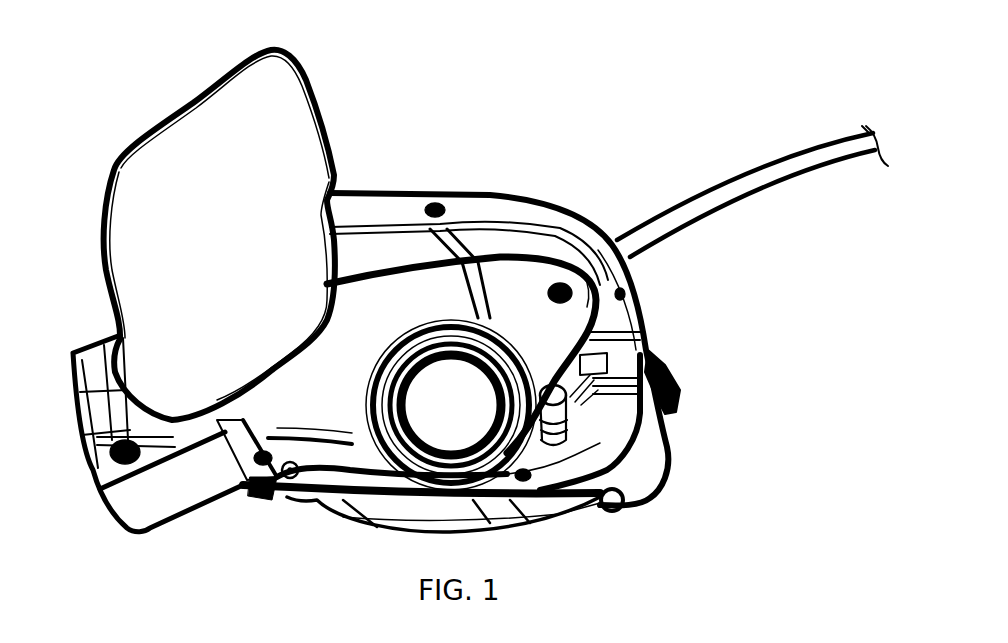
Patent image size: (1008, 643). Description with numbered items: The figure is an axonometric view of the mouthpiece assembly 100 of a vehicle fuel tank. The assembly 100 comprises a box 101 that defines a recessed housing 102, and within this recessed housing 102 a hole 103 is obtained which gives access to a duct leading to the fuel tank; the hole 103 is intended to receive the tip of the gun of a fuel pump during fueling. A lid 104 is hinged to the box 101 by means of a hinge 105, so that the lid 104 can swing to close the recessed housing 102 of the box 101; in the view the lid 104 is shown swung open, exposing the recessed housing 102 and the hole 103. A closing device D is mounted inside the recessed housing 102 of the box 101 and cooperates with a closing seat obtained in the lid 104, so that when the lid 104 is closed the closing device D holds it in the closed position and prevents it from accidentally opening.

The mouthpiece assembly 100 is at (568, 92).
The box 101 is at (520, 190).
The recessed housing 102 is at (515, 270).
The hole 103 is at (421, 402).
The lid 104 is at (218, 140).
The hinge 105 is at (90, 468).
The closing device D is at (573, 390).